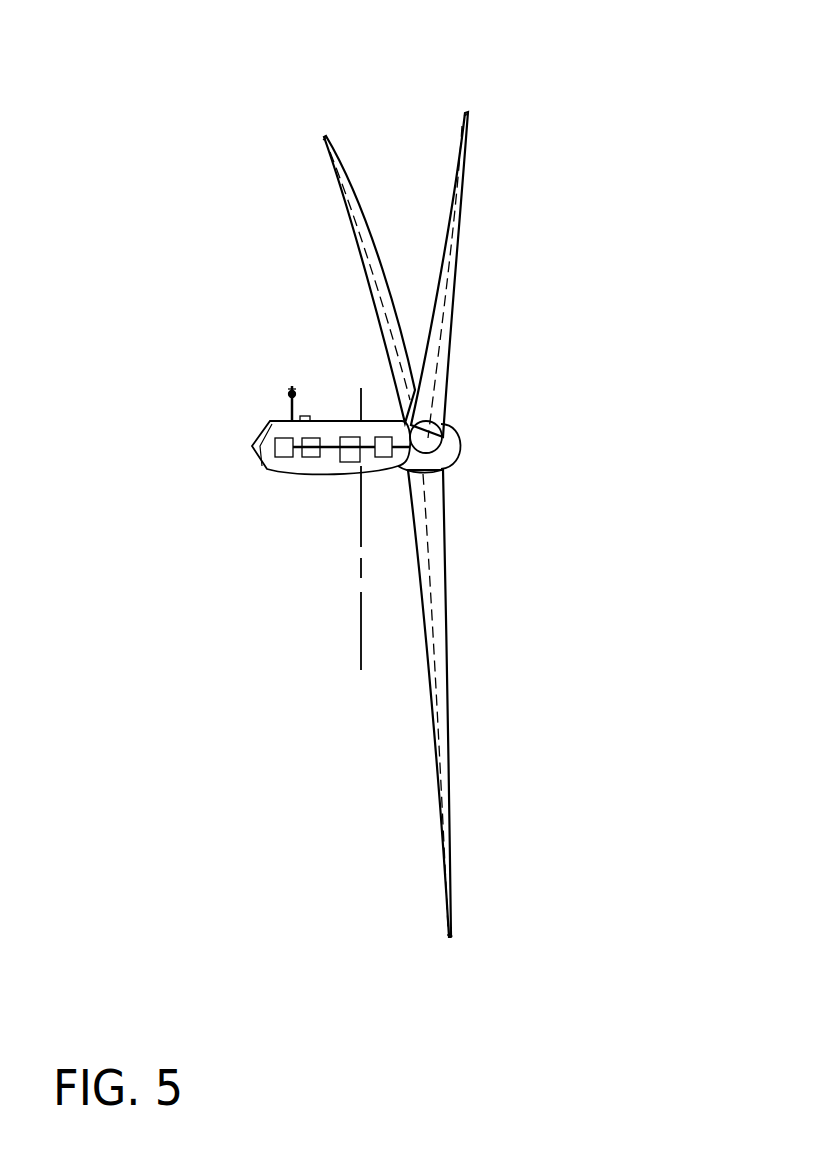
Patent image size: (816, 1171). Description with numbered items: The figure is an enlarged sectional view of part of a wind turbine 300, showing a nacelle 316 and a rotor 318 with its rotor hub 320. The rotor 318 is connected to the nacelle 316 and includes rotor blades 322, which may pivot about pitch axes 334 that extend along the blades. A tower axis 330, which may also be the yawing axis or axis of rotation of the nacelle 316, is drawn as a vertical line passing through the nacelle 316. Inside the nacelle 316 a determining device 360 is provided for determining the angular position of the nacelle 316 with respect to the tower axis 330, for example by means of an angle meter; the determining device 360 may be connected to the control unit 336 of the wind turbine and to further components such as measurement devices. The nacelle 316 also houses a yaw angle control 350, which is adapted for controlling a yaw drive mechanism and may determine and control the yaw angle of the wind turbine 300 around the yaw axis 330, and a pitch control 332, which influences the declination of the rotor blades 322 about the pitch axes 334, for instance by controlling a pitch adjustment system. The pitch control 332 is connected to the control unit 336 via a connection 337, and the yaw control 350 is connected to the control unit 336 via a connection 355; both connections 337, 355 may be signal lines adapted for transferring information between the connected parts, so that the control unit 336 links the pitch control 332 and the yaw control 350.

The wind turbine 300 is at (108, 118).
The nacelle 316 is at (300, 474).
The rotor 318 is at (470, 312).
The rotor hub 320 is at (445, 433).
The rotor blades 322 is at (353, 235).
The tower axis 330 is at (361, 633).
The pitch control 332 is at (392, 458).
The pitch axes 334 is at (323, 140).
The control unit 336 is at (352, 464).
The connection 337 is at (381, 437).
The yaw angle control 350 is at (311, 460).
The connection 355 is at (331, 446).
The determining device 360 is at (257, 441).